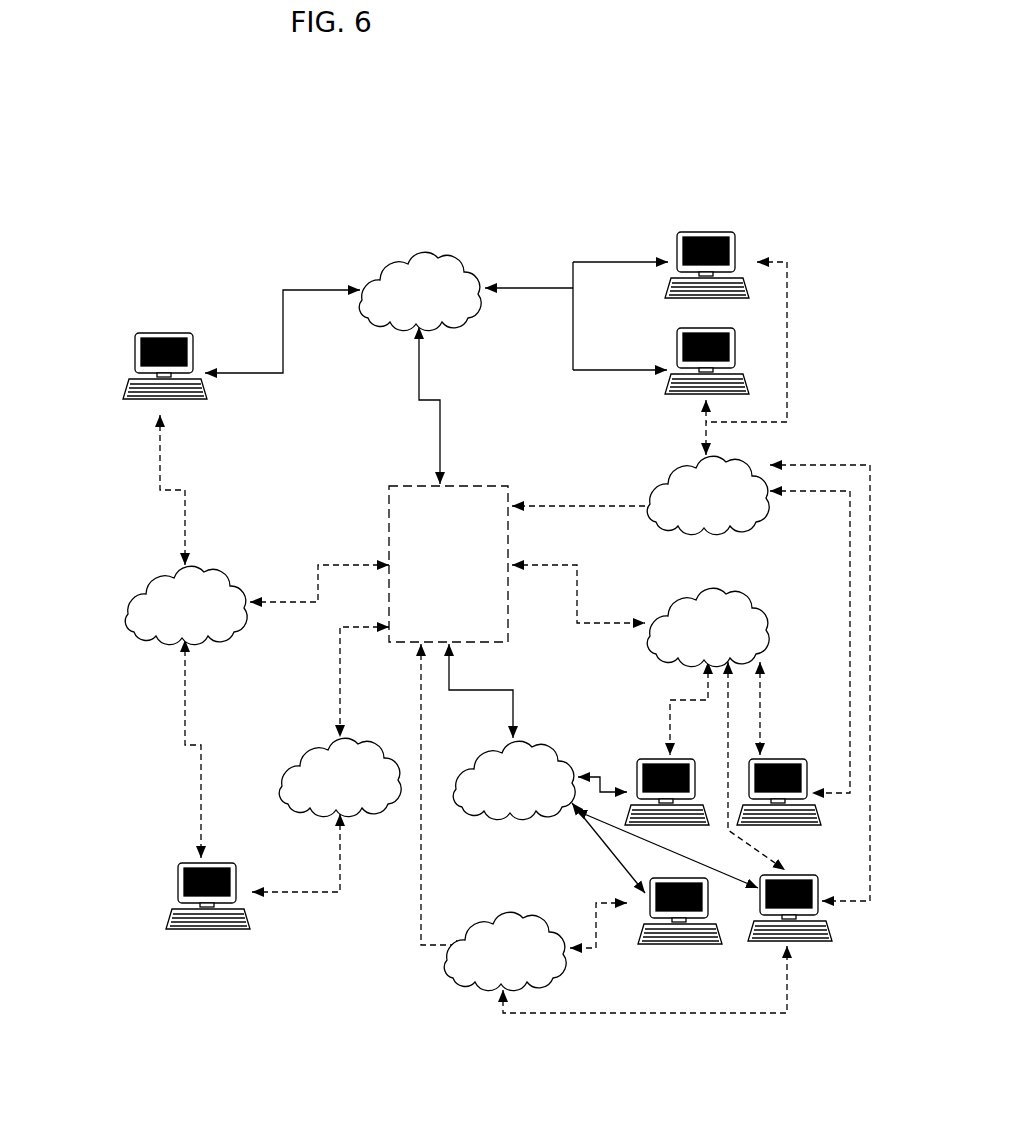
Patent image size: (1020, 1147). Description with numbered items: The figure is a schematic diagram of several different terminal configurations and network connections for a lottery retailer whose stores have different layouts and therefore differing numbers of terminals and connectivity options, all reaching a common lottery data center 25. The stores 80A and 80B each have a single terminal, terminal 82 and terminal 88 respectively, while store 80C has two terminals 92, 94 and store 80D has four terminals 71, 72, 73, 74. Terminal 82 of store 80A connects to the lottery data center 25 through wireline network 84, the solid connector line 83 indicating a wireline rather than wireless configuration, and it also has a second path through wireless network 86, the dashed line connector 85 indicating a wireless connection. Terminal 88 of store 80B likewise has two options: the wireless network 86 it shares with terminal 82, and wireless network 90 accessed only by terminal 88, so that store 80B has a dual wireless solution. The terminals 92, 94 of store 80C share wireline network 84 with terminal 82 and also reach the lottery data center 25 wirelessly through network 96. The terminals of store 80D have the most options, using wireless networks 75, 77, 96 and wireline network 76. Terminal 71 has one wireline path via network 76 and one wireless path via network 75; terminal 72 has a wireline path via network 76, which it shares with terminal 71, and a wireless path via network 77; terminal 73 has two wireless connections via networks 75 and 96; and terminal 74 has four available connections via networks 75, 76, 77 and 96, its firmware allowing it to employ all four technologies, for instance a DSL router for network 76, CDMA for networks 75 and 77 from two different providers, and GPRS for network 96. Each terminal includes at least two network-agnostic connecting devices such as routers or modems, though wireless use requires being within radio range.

The lottery data center 25 is at (503, 578).
The terminal 71 is at (655, 760).
The terminal 72 is at (699, 946).
The terminal 73 is at (788, 760).
The terminal 74 is at (820, 945).
The wireless network 75 is at (742, 613).
The wireline network 76 is at (505, 800).
The wireless network 77 is at (473, 980).
The store 80A is at (112, 302).
The store 80B is at (155, 987).
The store 80C is at (778, 148).
The store 80D is at (811, 1018).
The terminal 82 is at (188, 330).
The solid connector line 83 is at (306, 283).
The wireline network 84 is at (452, 268).
The dashed line connector 85 is at (152, 489).
The wireless network 86 is at (152, 632).
The terminal 88 is at (208, 932).
The wireless network 90 is at (322, 772).
The terminal 92 is at (737, 232).
The terminal 94 is at (670, 392).
The wireless network 96 is at (672, 487).